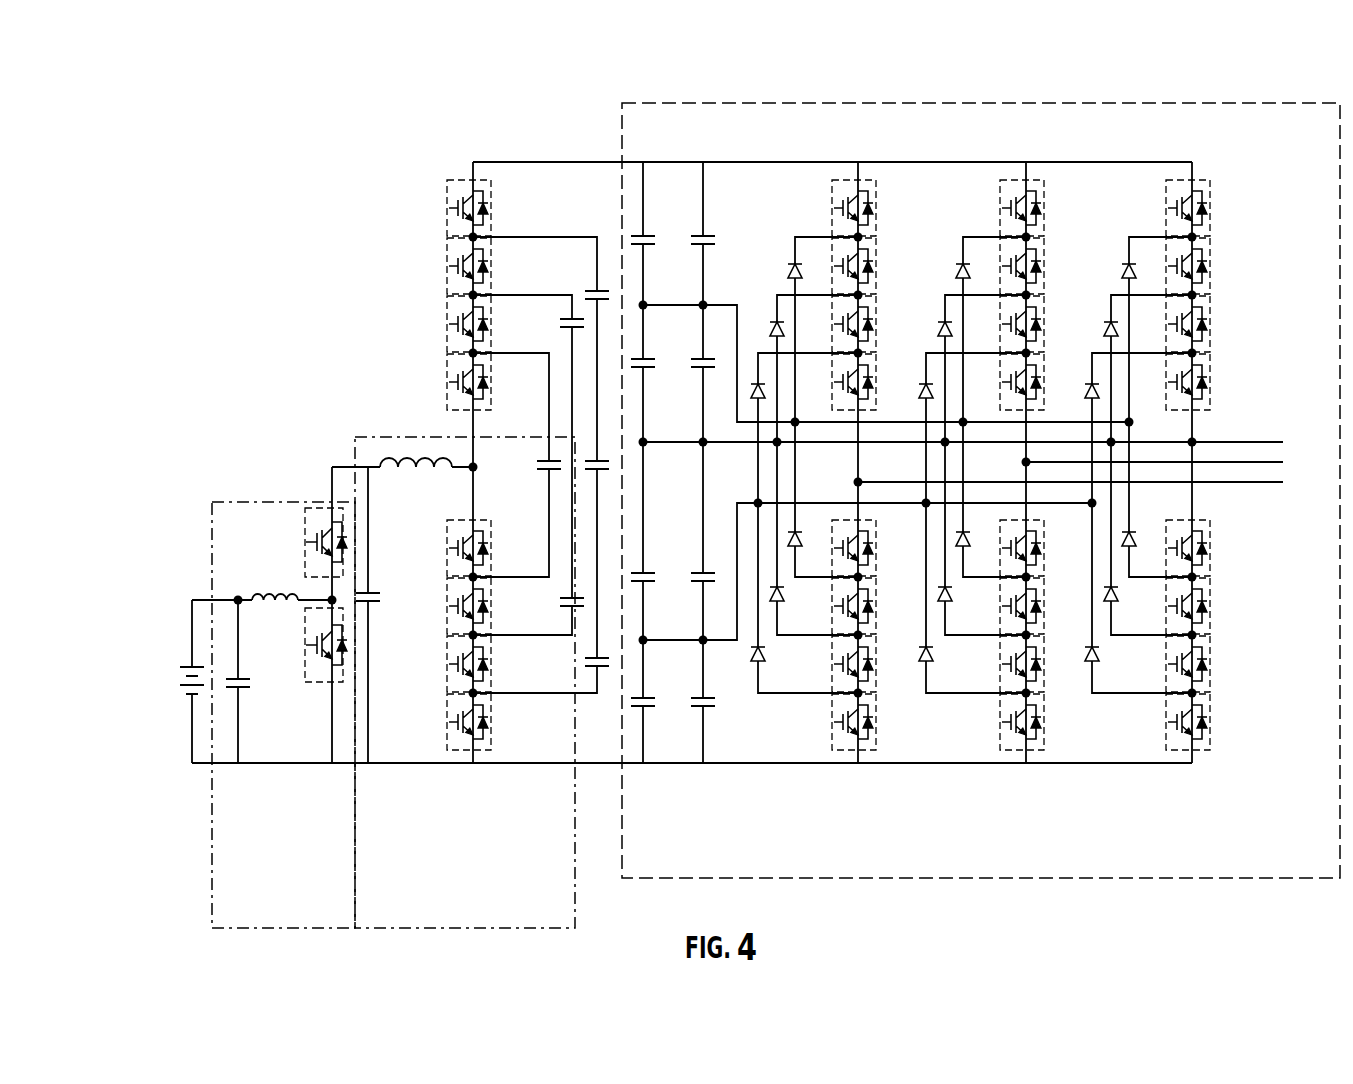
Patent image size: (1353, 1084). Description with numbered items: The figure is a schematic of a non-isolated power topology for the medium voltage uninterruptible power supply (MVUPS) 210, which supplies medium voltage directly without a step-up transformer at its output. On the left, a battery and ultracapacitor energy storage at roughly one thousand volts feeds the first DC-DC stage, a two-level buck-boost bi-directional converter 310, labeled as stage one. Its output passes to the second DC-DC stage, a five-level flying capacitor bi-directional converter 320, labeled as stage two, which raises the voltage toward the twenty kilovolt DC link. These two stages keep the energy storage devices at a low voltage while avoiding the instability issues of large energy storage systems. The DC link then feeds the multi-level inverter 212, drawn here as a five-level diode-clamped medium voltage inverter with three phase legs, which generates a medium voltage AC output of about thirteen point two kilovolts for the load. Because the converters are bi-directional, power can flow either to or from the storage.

The medium voltage uninterruptible power supply (MVUPS) 210 is at (151, 852).
The multi-level inverter section 212 is at (621, 140).
The two-level buck-boost bi-directional converter 310 is at (240, 500).
The 5-level flying capacitor bi-directional converter 320 is at (368, 436).